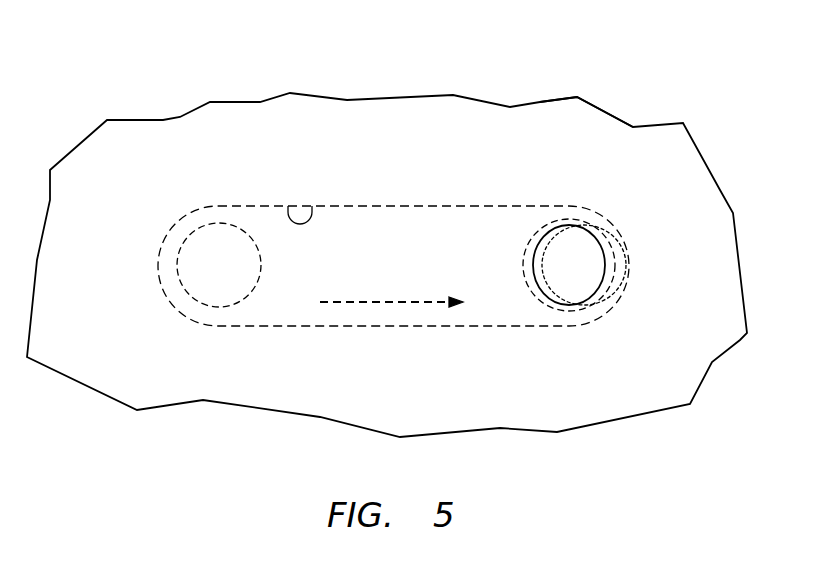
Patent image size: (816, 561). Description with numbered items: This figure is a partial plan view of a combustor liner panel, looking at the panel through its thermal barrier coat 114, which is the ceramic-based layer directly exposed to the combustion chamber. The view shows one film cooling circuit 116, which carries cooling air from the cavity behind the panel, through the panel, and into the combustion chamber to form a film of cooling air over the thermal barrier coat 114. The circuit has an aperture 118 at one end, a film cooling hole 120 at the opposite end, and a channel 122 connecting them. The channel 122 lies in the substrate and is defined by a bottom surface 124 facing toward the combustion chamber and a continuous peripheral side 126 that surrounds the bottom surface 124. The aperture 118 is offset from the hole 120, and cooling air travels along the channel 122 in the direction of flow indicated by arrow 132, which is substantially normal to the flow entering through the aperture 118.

The thermal barrier coat 114 is at (563, 130).
The film cooling circuit 116 is at (672, 88).
The aperture 118 is at (193, 280).
The film cooling hole 120 is at (577, 263).
The channel 122 is at (366, 273).
The bottom surface 124 is at (437, 200).
The peripheral side 126 is at (312, 203).
The direction of flow arrow 132 is at (391, 304).